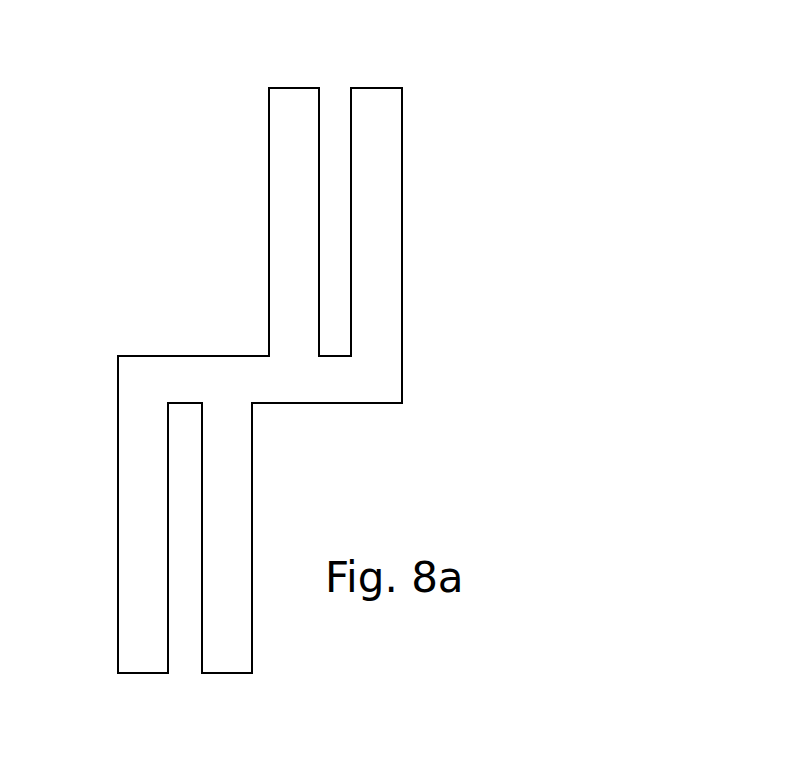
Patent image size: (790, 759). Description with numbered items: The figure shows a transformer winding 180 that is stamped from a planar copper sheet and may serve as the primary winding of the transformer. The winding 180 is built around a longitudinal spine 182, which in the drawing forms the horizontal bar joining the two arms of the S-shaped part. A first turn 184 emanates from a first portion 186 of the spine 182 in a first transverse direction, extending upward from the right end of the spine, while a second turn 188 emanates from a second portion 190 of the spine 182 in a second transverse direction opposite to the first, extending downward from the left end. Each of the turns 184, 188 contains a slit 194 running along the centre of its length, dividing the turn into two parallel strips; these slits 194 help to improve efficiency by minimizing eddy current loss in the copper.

The transformer winding 180 is at (185, 228).
The longitudinal spine 182 is at (332, 380).
The first turn 184 is at (403, 68).
The first portion of the spine 186 is at (375, 384).
The second turn 188 is at (247, 682).
The second portion of the spine 190 is at (179, 374).
The slit 194 is at (333, 212).